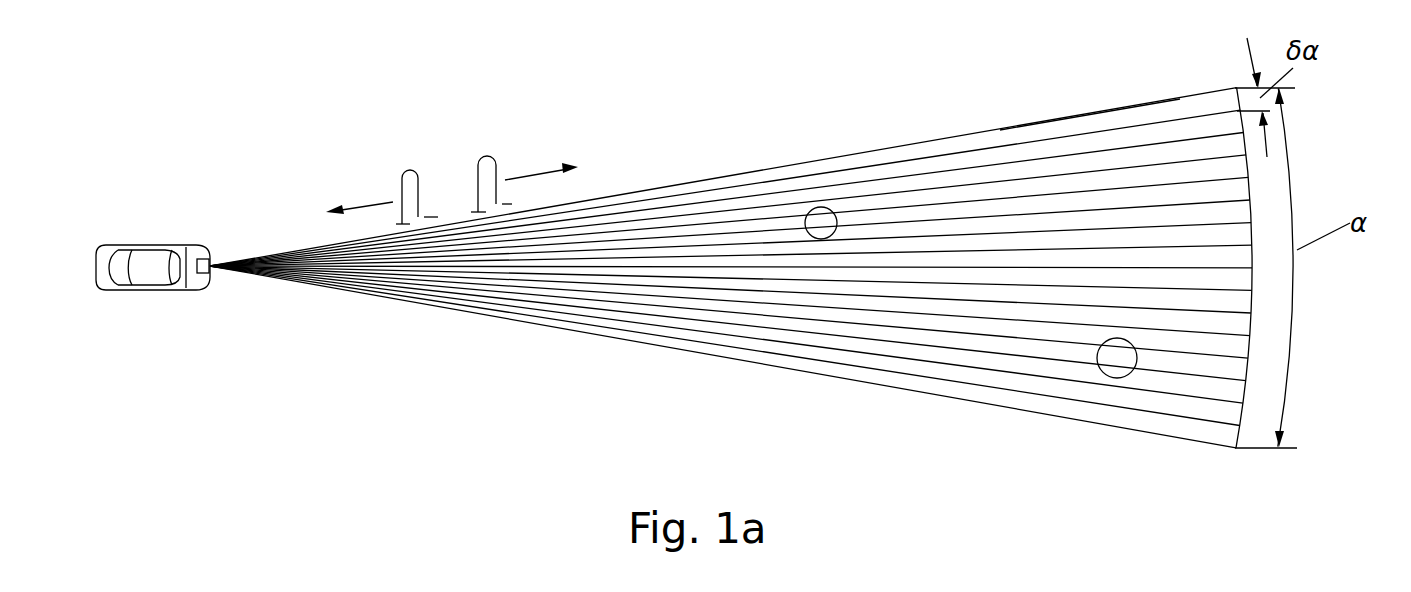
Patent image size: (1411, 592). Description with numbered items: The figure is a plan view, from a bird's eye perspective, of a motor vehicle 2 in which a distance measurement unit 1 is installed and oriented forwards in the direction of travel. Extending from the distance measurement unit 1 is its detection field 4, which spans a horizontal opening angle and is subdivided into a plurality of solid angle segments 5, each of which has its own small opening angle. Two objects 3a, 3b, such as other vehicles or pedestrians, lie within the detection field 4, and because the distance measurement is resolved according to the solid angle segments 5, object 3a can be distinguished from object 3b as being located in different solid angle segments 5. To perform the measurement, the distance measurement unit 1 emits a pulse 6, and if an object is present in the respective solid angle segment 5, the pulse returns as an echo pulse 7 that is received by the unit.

The distance measurement unit 1 is at (206, 265).
The motor vehicle 2 is at (103, 232).
The object 3a is at (818, 222).
The object 3b is at (1117, 358).
The detection field 4 is at (637, 180).
The solid angle segments 5 is at (1074, 164).
The pulse 6 is at (488, 167).
The echo pulse 7 is at (410, 185).